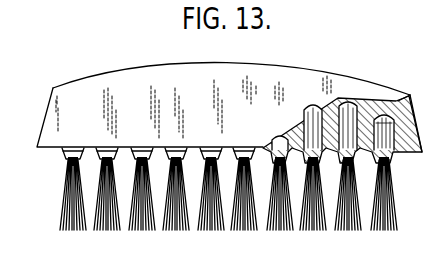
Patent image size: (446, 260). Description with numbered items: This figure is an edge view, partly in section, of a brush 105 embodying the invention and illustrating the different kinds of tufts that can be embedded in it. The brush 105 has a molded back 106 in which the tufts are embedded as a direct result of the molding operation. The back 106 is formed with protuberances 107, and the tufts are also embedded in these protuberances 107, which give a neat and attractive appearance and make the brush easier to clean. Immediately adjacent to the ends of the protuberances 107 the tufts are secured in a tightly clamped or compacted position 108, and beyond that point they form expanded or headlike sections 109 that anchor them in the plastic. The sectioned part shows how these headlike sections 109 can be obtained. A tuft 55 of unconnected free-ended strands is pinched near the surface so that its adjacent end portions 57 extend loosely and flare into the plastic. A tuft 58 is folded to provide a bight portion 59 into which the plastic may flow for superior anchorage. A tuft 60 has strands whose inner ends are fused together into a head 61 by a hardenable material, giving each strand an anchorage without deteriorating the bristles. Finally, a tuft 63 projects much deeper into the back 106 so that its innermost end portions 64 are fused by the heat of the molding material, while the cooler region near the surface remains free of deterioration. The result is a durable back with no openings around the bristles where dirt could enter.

The brush 105 is at (60, 72).
The back 106 is at (121, 75).
The protuberances 107 is at (63, 152).
The tightly clamped or compacted position 108 is at (72, 163).
The expanded or headlike sections 109 is at (75, 223).
The adjacent end portions 57 is at (355, 98).
The bight portion 59 is at (275, 150).
The head 61 is at (306, 140).
The innermost end portions 64 is at (402, 98).
The tuft 58 is at (283, 227).
The tuft 60 is at (313, 227).
The tuft 55 is at (348, 227).
The tuft 63 is at (385, 227).